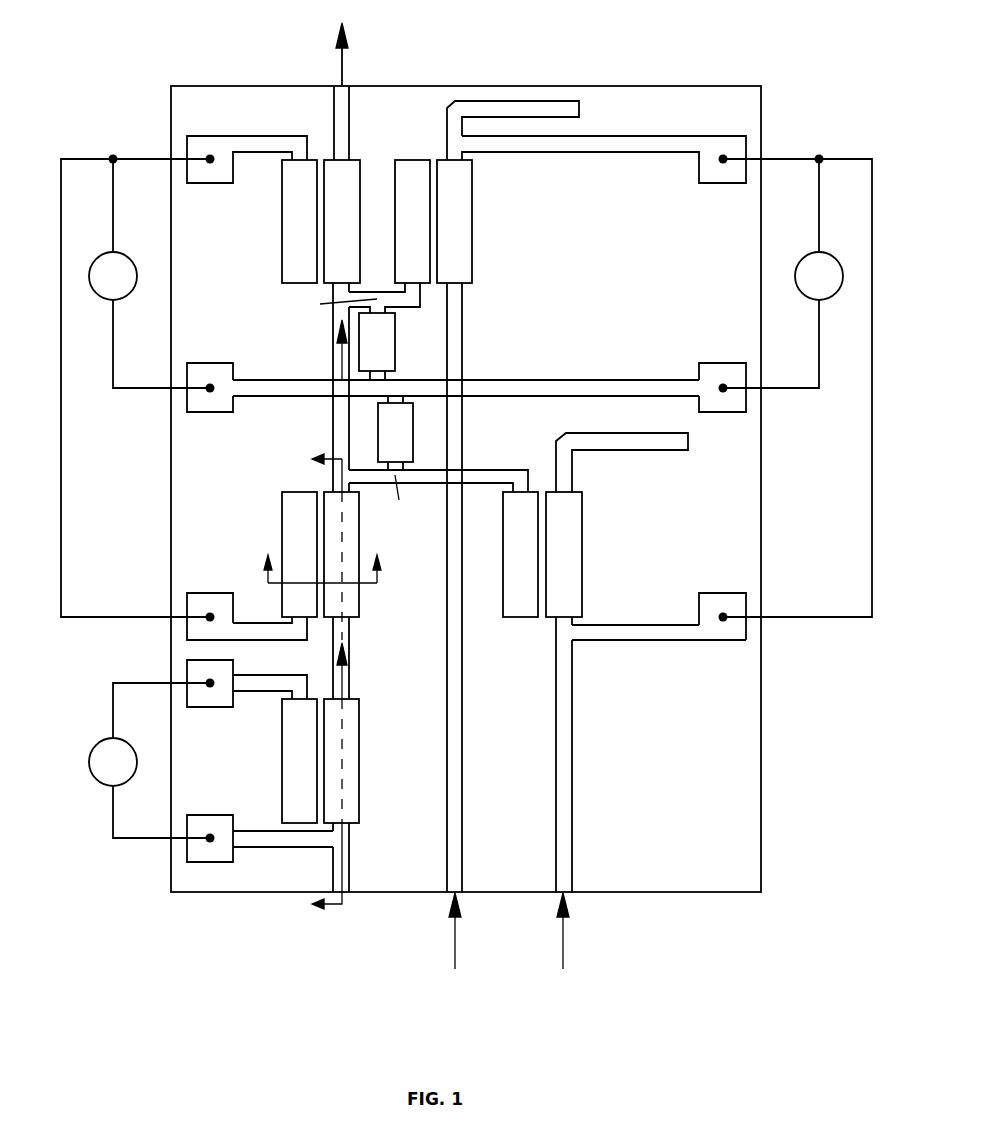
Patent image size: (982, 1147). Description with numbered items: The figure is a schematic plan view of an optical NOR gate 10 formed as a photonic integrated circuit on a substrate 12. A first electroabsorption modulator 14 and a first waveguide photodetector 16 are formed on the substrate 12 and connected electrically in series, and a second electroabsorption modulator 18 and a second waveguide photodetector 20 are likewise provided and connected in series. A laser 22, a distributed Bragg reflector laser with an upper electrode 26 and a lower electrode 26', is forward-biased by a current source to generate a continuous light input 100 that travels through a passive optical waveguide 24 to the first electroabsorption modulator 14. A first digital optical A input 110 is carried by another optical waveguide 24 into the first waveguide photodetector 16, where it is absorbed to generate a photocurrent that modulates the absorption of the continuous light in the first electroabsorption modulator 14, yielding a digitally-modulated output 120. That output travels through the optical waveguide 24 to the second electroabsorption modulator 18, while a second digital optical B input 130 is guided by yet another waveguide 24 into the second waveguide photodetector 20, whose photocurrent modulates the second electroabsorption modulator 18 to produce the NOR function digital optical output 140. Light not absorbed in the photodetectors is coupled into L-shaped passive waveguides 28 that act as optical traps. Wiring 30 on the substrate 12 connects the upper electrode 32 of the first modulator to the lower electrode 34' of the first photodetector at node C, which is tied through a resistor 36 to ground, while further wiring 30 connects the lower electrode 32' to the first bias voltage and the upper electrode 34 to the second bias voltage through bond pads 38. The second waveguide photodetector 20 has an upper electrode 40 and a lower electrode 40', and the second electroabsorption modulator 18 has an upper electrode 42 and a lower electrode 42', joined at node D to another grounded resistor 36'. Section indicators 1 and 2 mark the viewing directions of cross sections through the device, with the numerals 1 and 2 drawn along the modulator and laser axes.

The optical NOR gate 10 is at (758, 914).
The substrate 12 is at (708, 862).
The first electroabsorption modulator 14 is at (345, 554).
The first waveguide photodetector 16 is at (567, 554).
The second electroabsorption modulator 18 is at (297, 221).
The second waveguide photodetector 20 is at (458, 221).
The laser 22 is at (345, 761).
The passive optical waveguide 24 is at (445, 633).
The upper electrode 26 is at (341, 761).
The lower electrode 26' is at (299, 761).
The L-shaped passive waveguide 28 is at (448, 110).
The wiring 30 is at (482, 467).
The upper electrode 32 is at (341, 554).
The lower electrode 32' is at (299, 554).
The upper electrode 34 is at (564, 554).
The lower electrode 34' is at (520, 554).
The resistor 36 is at (395, 433).
The resistor 36' is at (384, 331).
The bond pad 38 is at (211, 367).
The upper electrode 40 is at (454, 221).
The lower electrode 40' is at (412, 221).
The upper electrode 42 is at (342, 221).
The lower electrode 42' is at (299, 221).
The continuous light input 100 is at (343, 682).
The A input 110 is at (565, 943).
The digitally-modulated output 120 is at (340, 353).
The B input 130 is at (453, 943).
The NOR function digital optical output 140 is at (340, 68).
The section line 1 is at (322, 558).
The section line 2 is at (319, 683).